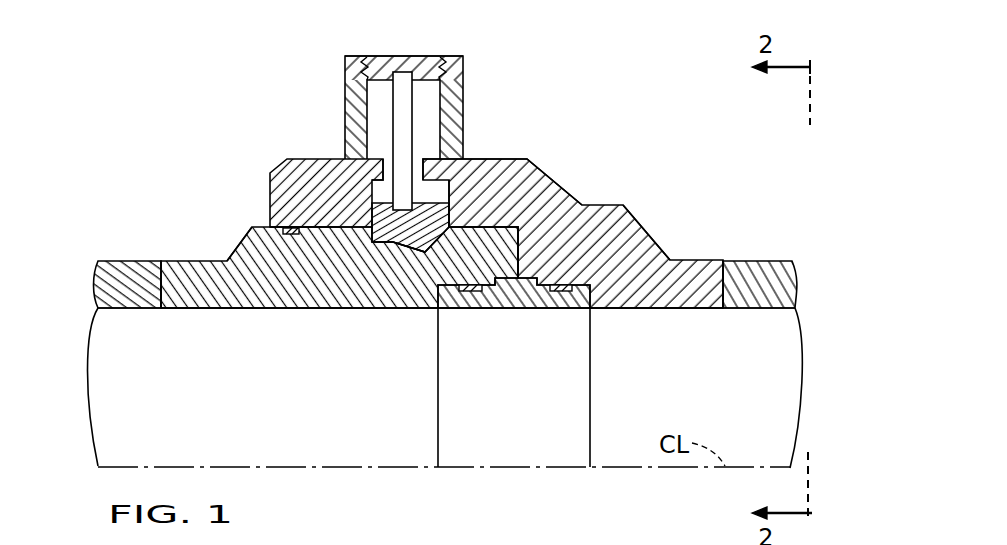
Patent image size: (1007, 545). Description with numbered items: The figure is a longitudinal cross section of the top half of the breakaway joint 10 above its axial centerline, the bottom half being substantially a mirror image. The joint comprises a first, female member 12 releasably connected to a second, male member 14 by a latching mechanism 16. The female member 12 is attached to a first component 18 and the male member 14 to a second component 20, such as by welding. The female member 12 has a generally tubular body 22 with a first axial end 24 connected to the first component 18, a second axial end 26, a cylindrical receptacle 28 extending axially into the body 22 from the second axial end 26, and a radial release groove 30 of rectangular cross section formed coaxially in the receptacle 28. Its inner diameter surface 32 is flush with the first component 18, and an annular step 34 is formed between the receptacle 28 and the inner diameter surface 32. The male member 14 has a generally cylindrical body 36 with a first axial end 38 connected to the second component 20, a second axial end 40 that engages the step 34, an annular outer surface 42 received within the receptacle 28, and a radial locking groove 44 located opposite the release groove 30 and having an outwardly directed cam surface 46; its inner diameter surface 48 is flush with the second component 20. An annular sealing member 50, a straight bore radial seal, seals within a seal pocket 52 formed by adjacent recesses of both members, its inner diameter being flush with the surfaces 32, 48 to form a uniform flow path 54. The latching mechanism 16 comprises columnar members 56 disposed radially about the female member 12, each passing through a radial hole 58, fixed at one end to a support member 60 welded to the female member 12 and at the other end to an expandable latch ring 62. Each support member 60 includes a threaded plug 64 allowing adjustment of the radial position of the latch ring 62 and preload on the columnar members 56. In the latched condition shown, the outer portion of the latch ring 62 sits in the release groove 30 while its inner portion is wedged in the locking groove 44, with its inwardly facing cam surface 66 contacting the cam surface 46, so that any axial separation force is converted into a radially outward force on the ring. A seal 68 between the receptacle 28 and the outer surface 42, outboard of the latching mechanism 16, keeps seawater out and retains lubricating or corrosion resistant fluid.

The breakaway joint 10 is at (651, 73).
The first member 12 is at (656, 225).
The second member 14 is at (166, 254).
The latching mechanism 16 is at (507, 139).
The first component 18 is at (773, 263).
The second component 20 is at (131, 262).
The tubular body 22 is at (607, 205).
The first axial end 24 is at (728, 278).
The second axial end 26 is at (270, 178).
The cylindrical receptacle 28 is at (279, 231).
The radial release groove 30 is at (372, 184).
The inner diameter surface 32 is at (653, 309).
The annular step 34 is at (509, 300).
The cylindrical body 36 is at (237, 250).
The first axial end 38 is at (158, 290).
The second axial end 40 is at (528, 233).
The annular outer surface 42 is at (317, 228).
The radial locking groove 44 is at (378, 243).
The cam surface 46 is at (452, 220).
The inner diameter surface 48 is at (190, 309).
The annular sealing member 50 is at (554, 315).
The seal pocket 52 is at (583, 298).
The flow path 54 is at (232, 431).
The columnar member 56 is at (392, 88).
The radial hole 58 is at (414, 167).
The support member 60 is at (464, 90).
The expandable latch ring 62 is at (400, 250).
The threaded plug 64 is at (420, 56).
The cam surface 66 is at (458, 292).
The seal 68 is at (285, 231).